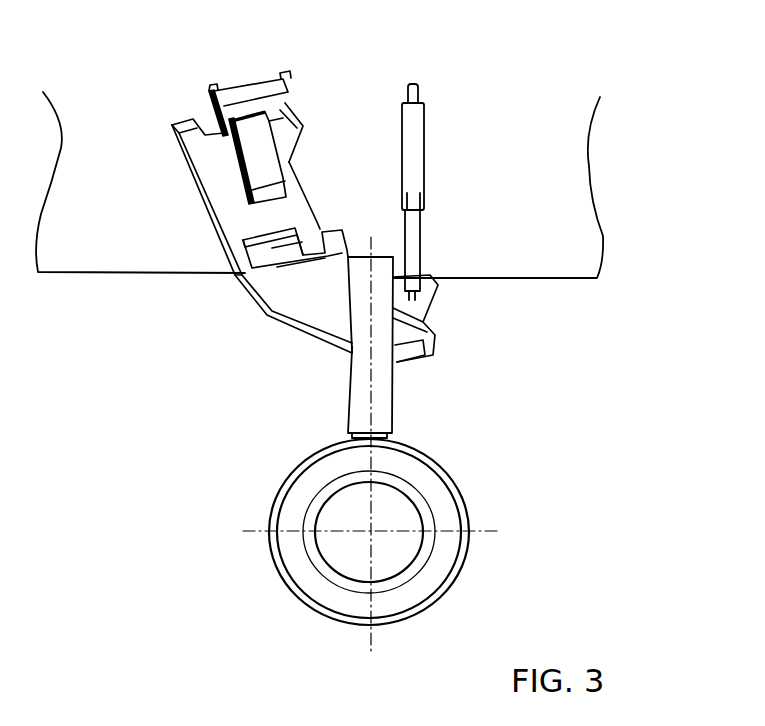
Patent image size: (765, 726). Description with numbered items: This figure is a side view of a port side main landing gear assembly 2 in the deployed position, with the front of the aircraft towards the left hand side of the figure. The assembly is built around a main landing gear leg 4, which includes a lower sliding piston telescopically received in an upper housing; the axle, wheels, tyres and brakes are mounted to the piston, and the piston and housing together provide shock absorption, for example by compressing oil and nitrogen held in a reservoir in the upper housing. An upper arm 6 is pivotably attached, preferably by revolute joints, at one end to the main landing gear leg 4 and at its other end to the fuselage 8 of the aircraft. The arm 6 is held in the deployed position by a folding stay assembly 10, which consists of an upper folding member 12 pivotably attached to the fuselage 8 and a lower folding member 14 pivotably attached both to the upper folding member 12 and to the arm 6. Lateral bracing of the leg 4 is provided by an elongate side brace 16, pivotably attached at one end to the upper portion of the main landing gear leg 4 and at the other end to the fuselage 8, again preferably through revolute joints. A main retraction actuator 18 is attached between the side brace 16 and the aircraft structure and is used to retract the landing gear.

The main landing gear assembly 2 is at (379, 339).
The main landing gear leg 4 is at (388, 384).
The upper arm 6 is at (214, 193).
The fuselage 8 is at (597, 279).
The folding stay assembly 10 is at (230, 190).
The upper folding member 12 is at (243, 103).
The lower folding member 14 is at (258, 154).
The side brace 16 is at (415, 308).
The main retraction actuator 18 is at (417, 157).